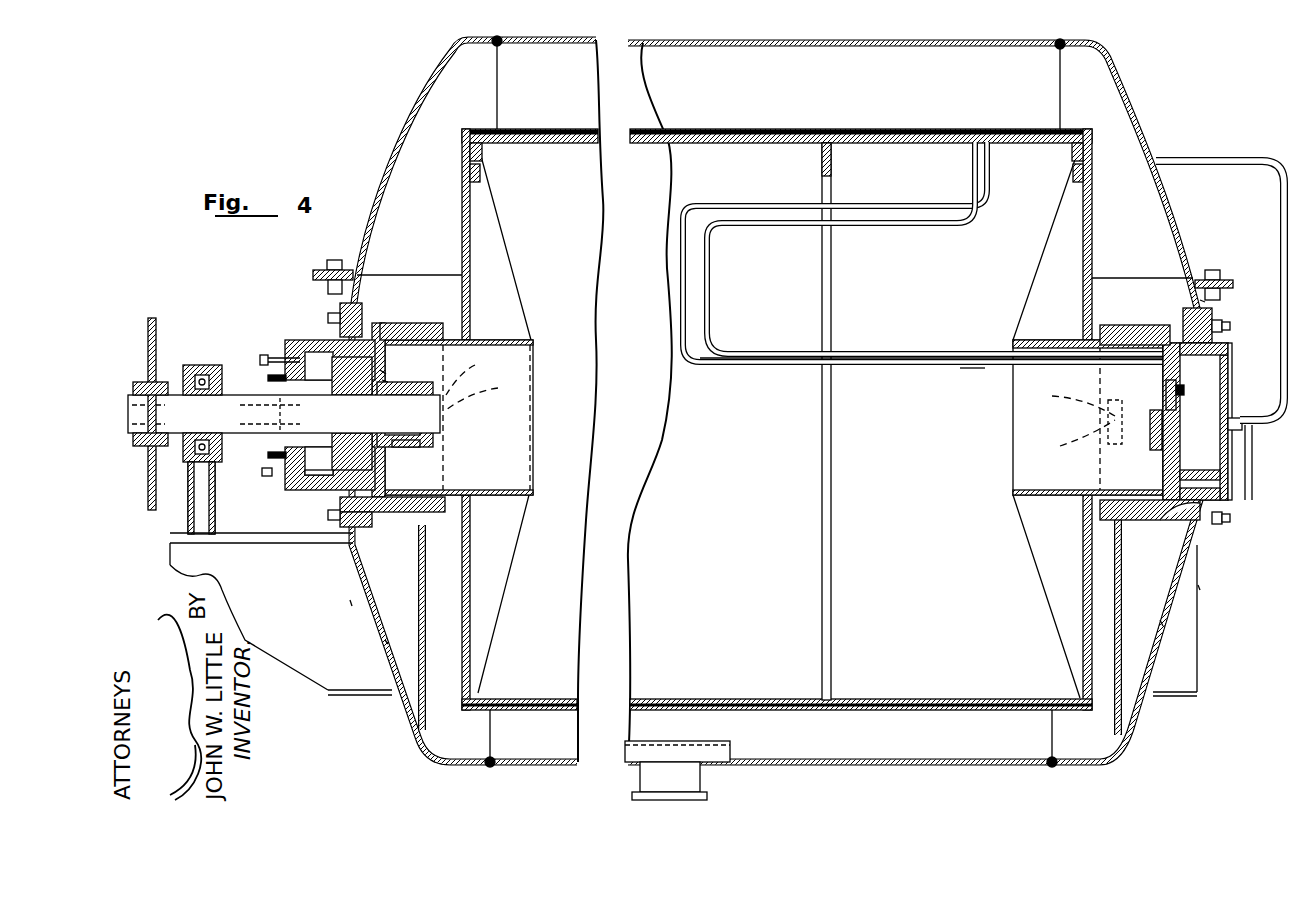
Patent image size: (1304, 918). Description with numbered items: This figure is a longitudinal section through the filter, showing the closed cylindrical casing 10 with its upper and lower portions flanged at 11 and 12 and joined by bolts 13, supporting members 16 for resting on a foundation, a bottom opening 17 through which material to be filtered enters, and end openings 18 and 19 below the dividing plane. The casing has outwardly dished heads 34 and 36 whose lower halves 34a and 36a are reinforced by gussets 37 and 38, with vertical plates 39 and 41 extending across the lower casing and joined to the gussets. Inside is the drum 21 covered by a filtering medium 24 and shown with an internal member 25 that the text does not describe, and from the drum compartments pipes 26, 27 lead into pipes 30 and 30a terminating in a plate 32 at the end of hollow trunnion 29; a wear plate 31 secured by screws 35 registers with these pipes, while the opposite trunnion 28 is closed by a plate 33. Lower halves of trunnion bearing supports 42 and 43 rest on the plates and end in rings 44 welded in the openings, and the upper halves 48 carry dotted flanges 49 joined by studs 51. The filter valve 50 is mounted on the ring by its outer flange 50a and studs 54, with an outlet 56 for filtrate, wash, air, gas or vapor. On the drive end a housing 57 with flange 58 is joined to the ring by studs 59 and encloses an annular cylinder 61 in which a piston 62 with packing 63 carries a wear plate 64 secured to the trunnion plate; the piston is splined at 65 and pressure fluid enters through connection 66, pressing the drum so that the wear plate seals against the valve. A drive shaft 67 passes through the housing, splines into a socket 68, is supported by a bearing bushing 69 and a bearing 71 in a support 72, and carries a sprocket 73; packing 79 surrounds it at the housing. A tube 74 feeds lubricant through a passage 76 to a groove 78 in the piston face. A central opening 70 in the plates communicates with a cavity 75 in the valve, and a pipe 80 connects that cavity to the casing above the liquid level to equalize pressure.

The casing 10 is at (840, 41).
The flange 11 is at (1222, 272).
The flange 12 is at (1234, 283).
The bolts 13 is at (1210, 268).
The supporting members 16 is at (366, 692).
The opening 17 is at (702, 787).
The opening 18 is at (345, 305).
The opening 19 is at (1222, 300).
The drum 21 is at (465, 143).
The filtering medium 24 is at (955, 132).
The post 25 is at (826, 421).
The pipe 26 is at (910, 204).
The pipe 27 is at (937, 224).
The hollow trunnion 28 is at (495, 340).
The hollow trunnion 29 is at (1028, 344).
The pipe 30 is at (945, 355).
The pipe 30a is at (985, 369).
The wear plate 31 is at (1178, 400).
The plate 32 is at (1166, 364).
The plate 33 is at (384, 372).
The outwardly dished head 34 is at (382, 176).
The lower half of head 34a is at (360, 614).
The screws 35 is at (1182, 396).
The outwardly dished head 36 is at (1178, 216).
The lower half of head 36a is at (1172, 622).
The gussets 37 is at (380, 640).
The gussets 38 is at (1200, 586).
The vertical plate 39 is at (426, 602).
The vertical plate 41 is at (1122, 618).
The trunnion bearing support 42 is at (395, 518).
The trunnion bearing support 43 is at (1156, 510).
The ring 44 is at (362, 305).
The upper half of bearing support 48 is at (440, 340).
The flanges 49 is at (784, 408).
The filter valve 50 is at (1230, 396).
The outer flange 50a is at (1224, 342).
The studs 51 is at (780, 405).
The studs 54 is at (1222, 326).
The outlet 56 is at (1254, 458).
The housing 57 is at (300, 344).
The flange 58 is at (340, 313).
The studs 59 is at (328, 516).
The annular cylinder 61 is at (290, 356).
The piston 62 is at (300, 480).
The packing 63 is at (290, 462).
The wear plate 64 is at (380, 325).
The spline 65 is at (332, 484).
The pressure connection 66 is at (290, 468).
The drive shaft 67 is at (205, 425).
The socket 68 is at (398, 450).
The bearing bushing 69 is at (352, 405).
The central opening 70 is at (1160, 440).
The bearing 71 is at (200, 365).
The support 72 is at (185, 546).
The sprocket 73 is at (150, 515).
The tube 74 is at (270, 372).
The cavity 75 is at (1216, 457).
The passage 76 is at (342, 370).
The groove 78 is at (386, 381).
The packing 79 is at (282, 396).
The pipe 80 is at (1254, 160).